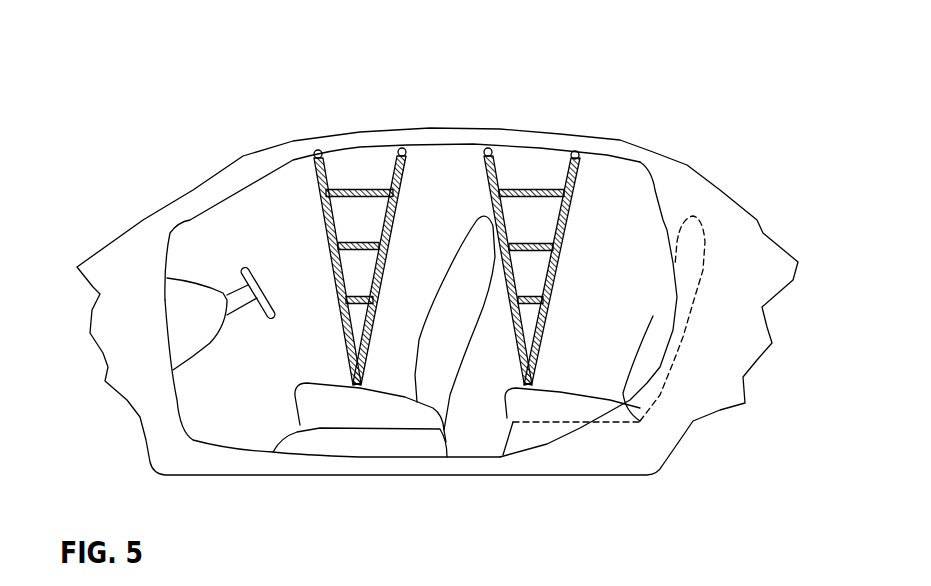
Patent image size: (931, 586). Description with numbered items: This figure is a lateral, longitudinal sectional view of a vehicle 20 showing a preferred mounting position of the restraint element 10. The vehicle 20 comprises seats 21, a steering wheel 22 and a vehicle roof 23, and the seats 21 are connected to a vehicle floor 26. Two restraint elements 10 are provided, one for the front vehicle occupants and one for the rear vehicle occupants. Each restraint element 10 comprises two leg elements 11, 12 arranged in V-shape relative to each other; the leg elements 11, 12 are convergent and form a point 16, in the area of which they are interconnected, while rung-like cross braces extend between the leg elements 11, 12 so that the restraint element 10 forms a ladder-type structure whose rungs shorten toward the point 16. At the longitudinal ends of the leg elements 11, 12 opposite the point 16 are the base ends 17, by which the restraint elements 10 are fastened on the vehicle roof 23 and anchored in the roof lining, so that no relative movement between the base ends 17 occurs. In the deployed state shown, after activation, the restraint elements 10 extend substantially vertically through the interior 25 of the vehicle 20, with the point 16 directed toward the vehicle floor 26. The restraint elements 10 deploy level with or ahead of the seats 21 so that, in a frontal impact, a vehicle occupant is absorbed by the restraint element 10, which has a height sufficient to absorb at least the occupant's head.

The restraint element 10 is at (426, 285).
The leg element 11 is at (380, 272).
The leg element 12 is at (322, 270).
The point 16 is at (356, 386).
The base ends 17 is at (314, 151).
The vehicle 20 is at (670, 137).
The seats 21 is at (470, 280).
The steering wheel 22 is at (243, 266).
The vehicle roof 23 is at (472, 136).
The interior 25 is at (612, 210).
The vehicle floor 26 is at (273, 474).